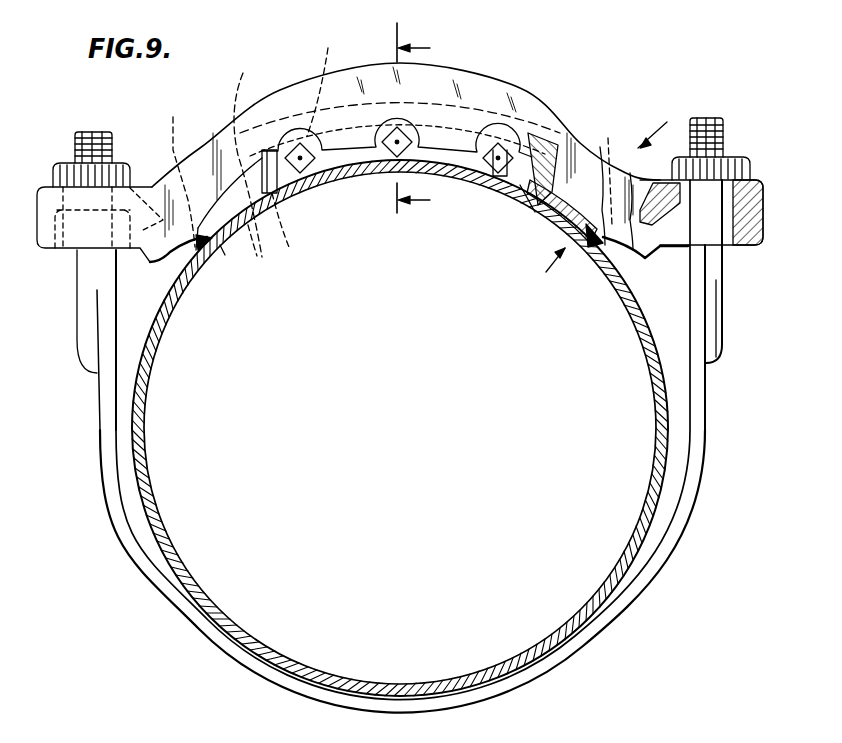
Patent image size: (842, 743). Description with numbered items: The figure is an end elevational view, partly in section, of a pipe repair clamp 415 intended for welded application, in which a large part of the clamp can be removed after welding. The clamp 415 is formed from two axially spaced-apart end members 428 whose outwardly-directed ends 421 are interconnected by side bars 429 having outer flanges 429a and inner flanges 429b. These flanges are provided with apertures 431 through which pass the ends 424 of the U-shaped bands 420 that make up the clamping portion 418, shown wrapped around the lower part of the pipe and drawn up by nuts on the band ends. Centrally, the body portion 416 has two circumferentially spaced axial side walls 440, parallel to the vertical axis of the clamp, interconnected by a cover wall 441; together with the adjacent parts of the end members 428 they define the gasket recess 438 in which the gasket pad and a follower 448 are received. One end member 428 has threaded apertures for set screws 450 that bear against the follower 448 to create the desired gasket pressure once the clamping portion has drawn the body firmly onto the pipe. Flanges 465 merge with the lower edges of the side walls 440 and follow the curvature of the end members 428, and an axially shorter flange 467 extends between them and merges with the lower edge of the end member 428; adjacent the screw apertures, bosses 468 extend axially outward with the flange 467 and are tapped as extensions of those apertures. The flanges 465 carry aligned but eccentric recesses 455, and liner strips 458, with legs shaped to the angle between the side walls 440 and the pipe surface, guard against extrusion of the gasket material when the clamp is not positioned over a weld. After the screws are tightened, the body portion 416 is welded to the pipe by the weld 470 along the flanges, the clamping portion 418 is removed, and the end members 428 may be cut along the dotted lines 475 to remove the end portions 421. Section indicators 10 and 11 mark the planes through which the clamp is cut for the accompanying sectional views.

The clamp 415 is at (553, 85).
The body portion 416 is at (489, 70).
The clamping portion 418 is at (141, 577).
The U-shaped bands 420 is at (177, 608).
The outwardly-directed ends 421 is at (152, 187).
The ends of the U-shaped bands 424 is at (83, 267).
The end members 428 is at (188, 163).
The side bars 429 is at (45, 200).
The outer flanges 429a is at (765, 247).
The inner flanges 429b is at (663, 160).
The apertures 431 is at (113, 172).
The gasket recess 438 is at (296, 227).
The axial side walls 440 is at (590, 108).
The cover wall 441 is at (337, 112).
The follower 448 is at (510, 187).
The set screws 450 is at (308, 177).
The eccentric recesses 455 is at (258, 258).
The liner strips 458 is at (535, 212).
The flanges 465 is at (585, 228).
The axially shorter flange 467 is at (223, 250).
The bosses 468 is at (293, 140).
The weld 470 is at (200, 240).
The dotted lines 475 is at (397, 176).
The section line 10- 10 is at (606, 209).
The section line 11- 11 is at (426, 118).